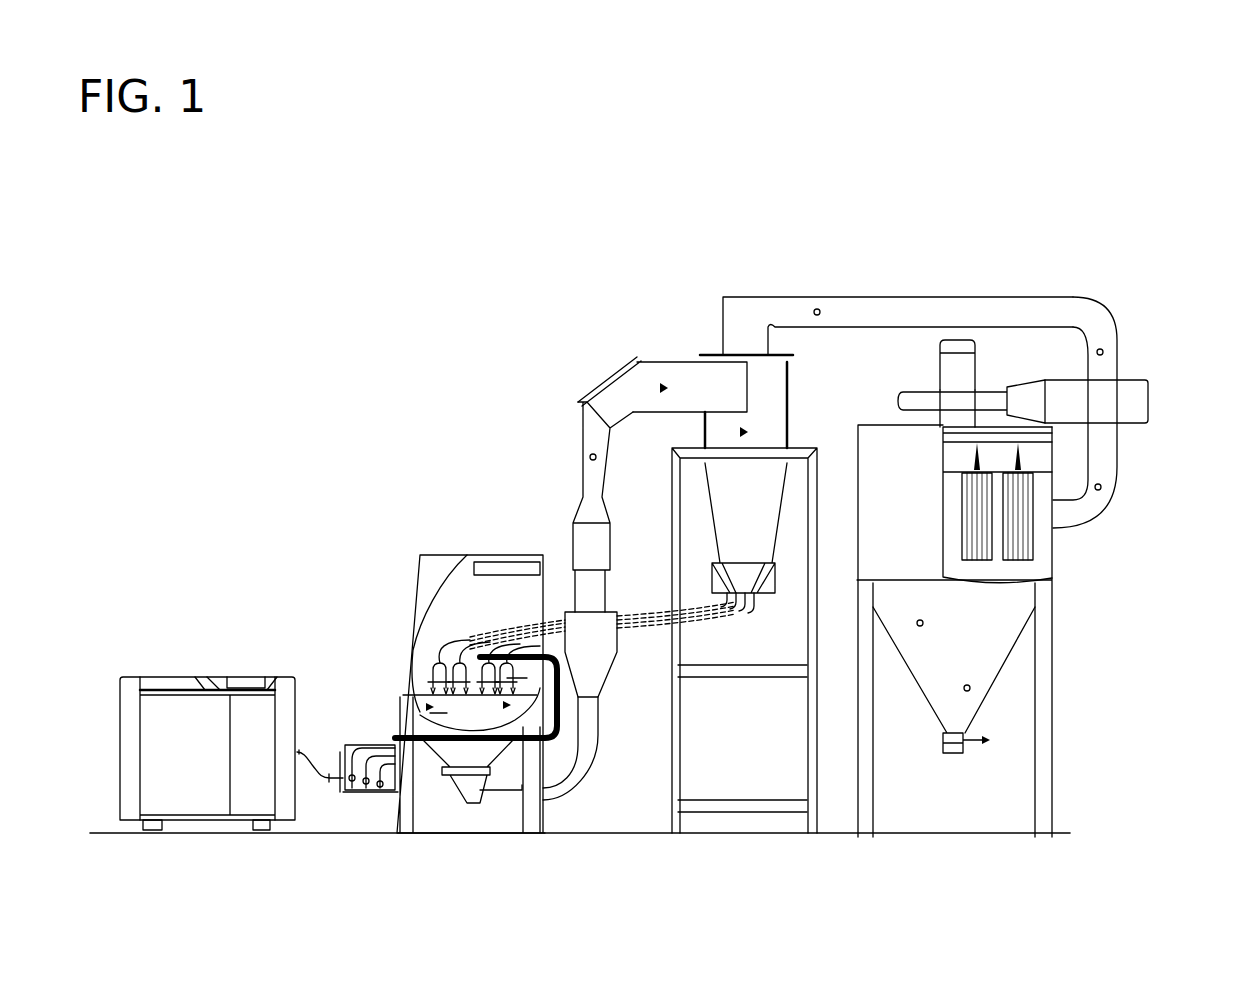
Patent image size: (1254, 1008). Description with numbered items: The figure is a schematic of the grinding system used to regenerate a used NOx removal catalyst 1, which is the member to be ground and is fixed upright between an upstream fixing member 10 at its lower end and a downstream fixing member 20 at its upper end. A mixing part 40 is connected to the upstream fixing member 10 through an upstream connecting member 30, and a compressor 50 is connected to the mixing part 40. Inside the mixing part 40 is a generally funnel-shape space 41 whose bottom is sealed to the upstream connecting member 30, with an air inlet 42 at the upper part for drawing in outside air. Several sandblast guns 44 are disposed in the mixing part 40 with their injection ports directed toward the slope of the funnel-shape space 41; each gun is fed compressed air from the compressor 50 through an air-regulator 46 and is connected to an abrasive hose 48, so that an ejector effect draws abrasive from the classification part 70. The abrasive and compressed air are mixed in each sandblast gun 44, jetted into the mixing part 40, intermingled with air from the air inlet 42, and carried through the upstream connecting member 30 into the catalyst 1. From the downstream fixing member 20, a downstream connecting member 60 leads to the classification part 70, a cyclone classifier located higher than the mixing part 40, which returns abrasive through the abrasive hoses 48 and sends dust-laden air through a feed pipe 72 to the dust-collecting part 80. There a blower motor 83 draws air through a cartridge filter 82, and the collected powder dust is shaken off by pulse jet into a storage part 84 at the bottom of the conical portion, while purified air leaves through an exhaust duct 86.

The NOx removal catalyst 1 is at (568, 580).
The upstream fixing member 10 is at (600, 660).
The downstream fixing member 20 is at (598, 547).
The upstream connecting member 30 is at (605, 762).
The mixing part 40 is at (529, 667).
The generally funnel-shape space 41 is at (405, 708).
The air inlet 42 is at (532, 570).
The sandblast gun 44 is at (448, 675).
The air-regulator 46 is at (343, 757).
The abrasive hose 48 is at (505, 633).
The compressor 50 is at (198, 690).
The downstream connecting member 60 is at (598, 440).
The classification part 70 is at (760, 390).
The feed pipe 72 is at (1073, 315).
The dust-collecting part 80 is at (1011, 546).
The cartridge filter 82 is at (1030, 543).
The blower motor 83 is at (953, 340).
The storage part 84 is at (955, 715).
The exhaust pipe 86 is at (1098, 388).